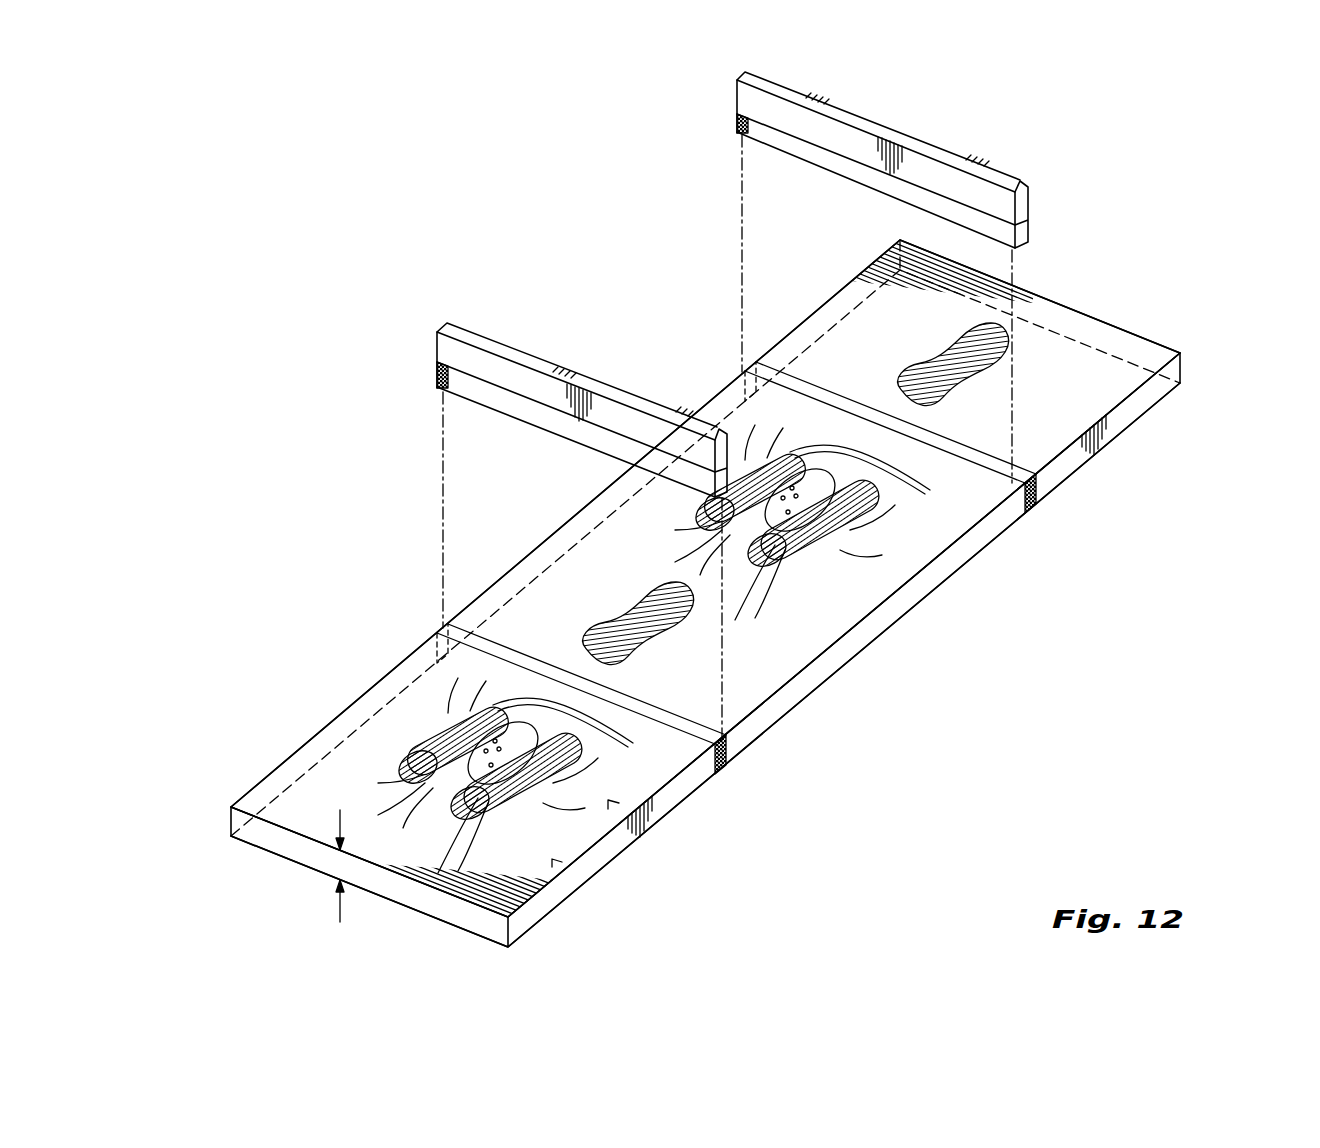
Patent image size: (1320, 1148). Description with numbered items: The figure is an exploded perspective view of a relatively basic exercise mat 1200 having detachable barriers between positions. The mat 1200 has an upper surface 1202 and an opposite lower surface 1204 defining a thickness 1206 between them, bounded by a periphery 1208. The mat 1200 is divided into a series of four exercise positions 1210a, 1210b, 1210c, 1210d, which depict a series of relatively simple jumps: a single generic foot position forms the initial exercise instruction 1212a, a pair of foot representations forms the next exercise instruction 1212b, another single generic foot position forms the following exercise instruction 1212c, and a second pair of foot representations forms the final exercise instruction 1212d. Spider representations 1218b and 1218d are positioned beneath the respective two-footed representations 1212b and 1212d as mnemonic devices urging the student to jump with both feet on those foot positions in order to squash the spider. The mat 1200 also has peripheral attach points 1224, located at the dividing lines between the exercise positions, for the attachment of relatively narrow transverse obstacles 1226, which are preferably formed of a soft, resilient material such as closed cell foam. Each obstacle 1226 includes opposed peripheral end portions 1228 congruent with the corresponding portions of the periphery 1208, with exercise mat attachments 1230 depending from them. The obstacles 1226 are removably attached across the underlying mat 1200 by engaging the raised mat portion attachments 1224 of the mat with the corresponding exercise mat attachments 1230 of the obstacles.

The mat 1200 is at (1135, 474).
The upper surface 1202 is at (643, 813).
The lower surface 1204 is at (580, 877).
The thickness 1206 is at (336, 866).
The periphery 1208 is at (372, 691).
The exercise position 1210a is at (1008, 318).
The exercise position 1210b is at (843, 532).
The exercise position 1210c is at (751, 635).
The exercise position 1210d is at (427, 805).
The exercise instruction 1212a is at (943, 364).
The exercise instruction 1212b is at (878, 496).
The exercise instruction 1212c is at (630, 613).
The exercise instruction 1212d is at (578, 750).
The spider representation 1218b is at (826, 522).
The spider representation 1218d is at (536, 775).
The peripheral attach point 1224 is at (745, 380).
The transverse obstacle 1226 is at (733, 407).
The peripheral end portion 1228 is at (735, 79).
The exercise mat attachment 1230 is at (748, 120).